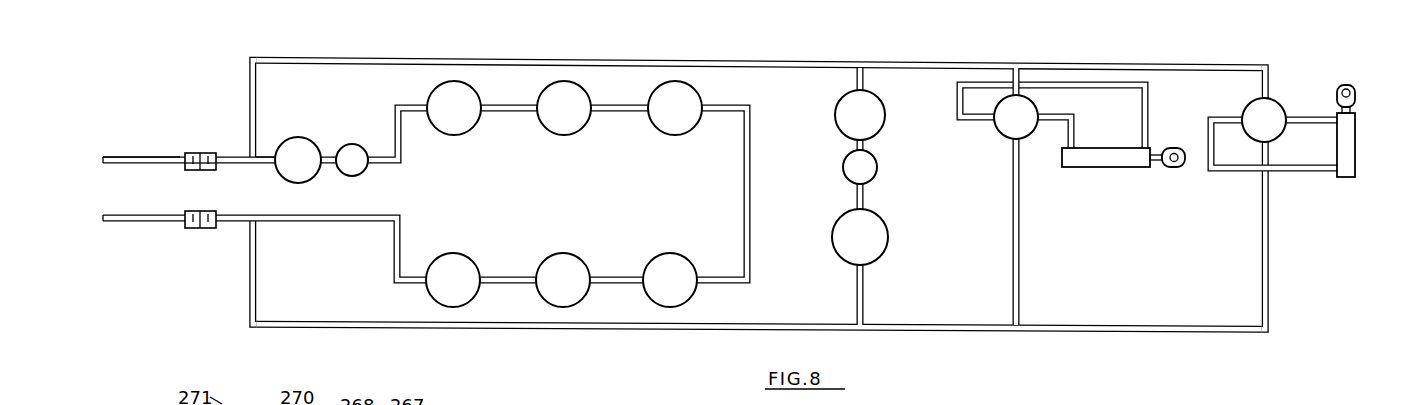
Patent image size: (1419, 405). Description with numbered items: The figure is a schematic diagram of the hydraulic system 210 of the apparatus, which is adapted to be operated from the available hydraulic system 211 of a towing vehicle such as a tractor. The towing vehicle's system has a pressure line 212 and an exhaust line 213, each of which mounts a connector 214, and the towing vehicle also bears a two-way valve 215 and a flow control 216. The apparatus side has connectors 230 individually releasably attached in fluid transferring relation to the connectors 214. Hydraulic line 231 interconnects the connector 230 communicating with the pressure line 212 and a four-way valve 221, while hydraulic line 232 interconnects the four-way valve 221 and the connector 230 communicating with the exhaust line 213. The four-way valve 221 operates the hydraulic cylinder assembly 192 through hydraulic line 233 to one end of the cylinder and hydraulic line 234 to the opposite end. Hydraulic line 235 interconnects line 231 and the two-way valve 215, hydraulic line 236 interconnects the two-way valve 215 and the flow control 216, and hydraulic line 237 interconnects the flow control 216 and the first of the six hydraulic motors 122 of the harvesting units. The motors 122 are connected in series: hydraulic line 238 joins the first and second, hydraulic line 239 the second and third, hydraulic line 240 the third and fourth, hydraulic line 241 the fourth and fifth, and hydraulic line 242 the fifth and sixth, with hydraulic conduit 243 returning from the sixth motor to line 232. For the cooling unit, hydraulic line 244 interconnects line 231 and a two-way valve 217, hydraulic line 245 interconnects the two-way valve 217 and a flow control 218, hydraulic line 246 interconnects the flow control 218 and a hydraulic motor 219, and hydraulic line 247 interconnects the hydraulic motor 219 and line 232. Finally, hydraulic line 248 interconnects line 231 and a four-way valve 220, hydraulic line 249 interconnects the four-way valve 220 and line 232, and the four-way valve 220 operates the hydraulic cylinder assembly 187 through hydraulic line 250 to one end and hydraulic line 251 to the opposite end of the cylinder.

The hydraulic system 210 is at (759, 187).
The hydraulic system of the towing vehicle 211 is at (110, 155).
The pressure line 212 is at (125, 166).
The exhaust line 213 is at (152, 223).
The connector 214 is at (194, 172).
The two-way valve 215 is at (297, 176).
The flow control 216 is at (355, 146).
The two-way valve 217 is at (884, 105).
The flow control 218 is at (876, 162).
The hydraulic motor 219 is at (888, 230).
The four-way valve 220 is at (1000, 130).
The four-way valve 221 is at (1273, 99).
The connector 230 is at (210, 151).
The hydraulic line 231 is at (453, 58).
The hydraulic line 232 is at (687, 330).
The hydraulic line 233 is at (1325, 122).
The hydraulic line 234 is at (1245, 168).
The hydraulic line 235 is at (263, 157).
The hydraulic line 236 is at (330, 168).
The hydraulic line 237 is at (417, 105).
The hydraulic line 238 is at (500, 105).
The hydraulic line 239 is at (608, 105).
The hydraulic line 240 is at (751, 188).
The hydraulic line 241 is at (612, 277).
The hydraulic line 242 is at (497, 287).
The hydraulic conduit 243 is at (392, 248).
The hydraulic line 244 is at (857, 80).
The hydraulic line 245 is at (856, 147).
The hydraulic line 246 is at (856, 201).
The hydraulic line 247 is at (855, 291).
The hydraulic line 248 is at (1012, 79).
The hydraulic line 249 is at (1012, 186).
The hydraulic line 250 is at (1140, 105).
The hydraulic line 251 is at (1062, 123).
The hydraulic motor 122 is at (458, 134).
The hydraulic cylinder assembly 187 is at (1102, 160).
The hydraulic cylinder assembly 192 is at (1349, 150).